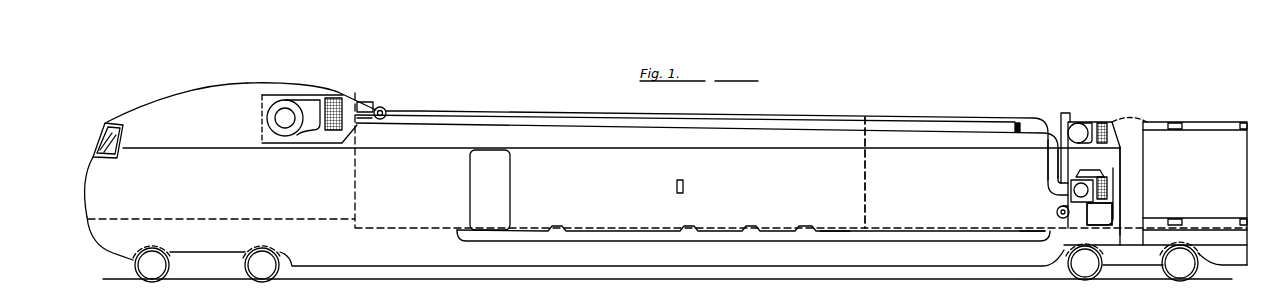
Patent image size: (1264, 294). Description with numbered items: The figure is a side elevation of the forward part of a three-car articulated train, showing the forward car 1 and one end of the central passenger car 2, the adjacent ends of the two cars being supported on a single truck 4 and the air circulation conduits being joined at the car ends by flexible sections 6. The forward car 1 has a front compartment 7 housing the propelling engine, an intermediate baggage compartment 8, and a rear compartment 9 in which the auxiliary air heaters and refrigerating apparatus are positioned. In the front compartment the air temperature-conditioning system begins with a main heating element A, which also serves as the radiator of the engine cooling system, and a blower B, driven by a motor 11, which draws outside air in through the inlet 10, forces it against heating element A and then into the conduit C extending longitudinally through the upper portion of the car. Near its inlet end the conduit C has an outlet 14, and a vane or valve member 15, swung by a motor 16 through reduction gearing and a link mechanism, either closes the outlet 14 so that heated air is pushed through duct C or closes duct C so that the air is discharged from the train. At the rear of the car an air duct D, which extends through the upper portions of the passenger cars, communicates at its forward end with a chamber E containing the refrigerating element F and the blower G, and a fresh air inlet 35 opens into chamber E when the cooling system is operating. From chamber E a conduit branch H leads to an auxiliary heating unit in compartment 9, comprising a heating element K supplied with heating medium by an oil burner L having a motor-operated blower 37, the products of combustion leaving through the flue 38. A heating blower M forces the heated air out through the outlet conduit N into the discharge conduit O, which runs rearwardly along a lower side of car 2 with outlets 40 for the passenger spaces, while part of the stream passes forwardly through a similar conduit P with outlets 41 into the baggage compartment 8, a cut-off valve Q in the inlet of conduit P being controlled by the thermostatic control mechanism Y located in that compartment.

The forward car 1 is at (822, 126).
The passenger car 2 is at (1200, 128).
The truck 4 is at (1127, 268).
The flexible section 6 is at (1133, 118).
The front compartment 7 is at (195, 132).
The baggage compartment 8 is at (543, 163).
The rear compartment 9 is at (912, 160).
The inlet 10 is at (258, 109).
The motor 11 is at (278, 120).
The outlet 14 is at (374, 108).
The vane or valve member 15 is at (370, 130).
The motor 16 is at (387, 112).
The fresh air inlet 35 is at (1061, 113).
The motor-operated blower 37 is at (1059, 207).
The flue 38 is at (1102, 174).
The outlets 40 is at (1183, 221).
The outlets 41 is at (540, 231).
The main heating element A is at (333, 98).
The blower B is at (285, 100).
The conduit C is at (684, 122).
The air duct D is at (1222, 126).
The chamber E is at (1095, 149).
The refrigerating element F is at (1102, 122).
The blower G is at (1078, 128).
The conduit branch H is at (1057, 170).
The heating element K is at (1113, 191).
The oil burner L is at (1052, 215).
The heating blower M is at (1082, 197).
The outlet conduit N is at (1098, 218).
The discharge conduit O is at (1215, 228).
The conduit P is at (833, 233).
The cut-off valve or vane Q is at (1033, 235).
The thermostatic control mechanism Y is at (694, 188).